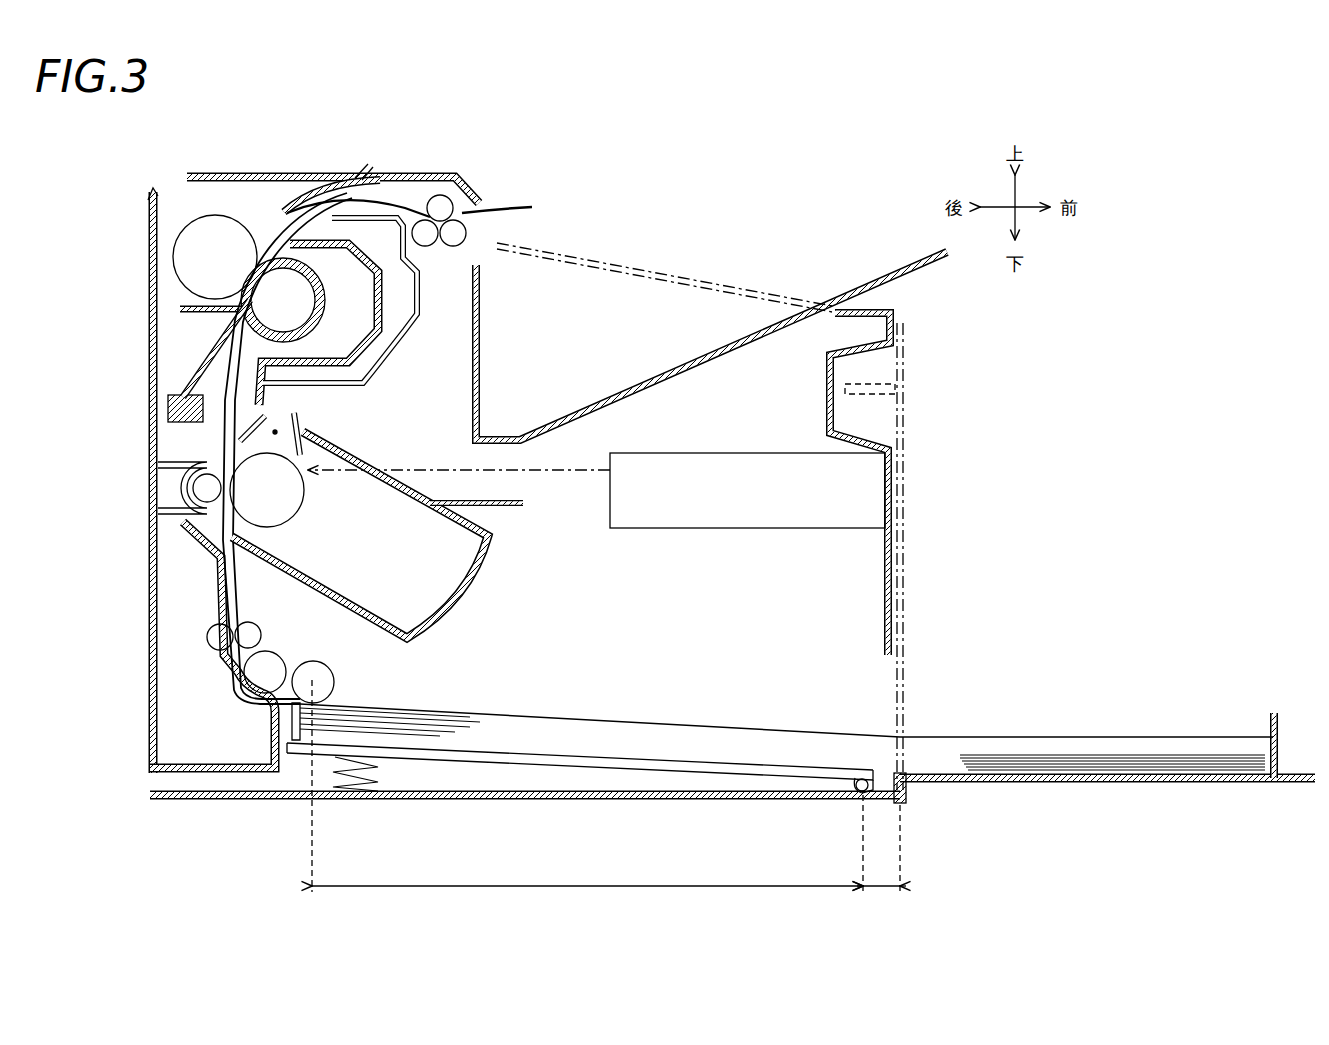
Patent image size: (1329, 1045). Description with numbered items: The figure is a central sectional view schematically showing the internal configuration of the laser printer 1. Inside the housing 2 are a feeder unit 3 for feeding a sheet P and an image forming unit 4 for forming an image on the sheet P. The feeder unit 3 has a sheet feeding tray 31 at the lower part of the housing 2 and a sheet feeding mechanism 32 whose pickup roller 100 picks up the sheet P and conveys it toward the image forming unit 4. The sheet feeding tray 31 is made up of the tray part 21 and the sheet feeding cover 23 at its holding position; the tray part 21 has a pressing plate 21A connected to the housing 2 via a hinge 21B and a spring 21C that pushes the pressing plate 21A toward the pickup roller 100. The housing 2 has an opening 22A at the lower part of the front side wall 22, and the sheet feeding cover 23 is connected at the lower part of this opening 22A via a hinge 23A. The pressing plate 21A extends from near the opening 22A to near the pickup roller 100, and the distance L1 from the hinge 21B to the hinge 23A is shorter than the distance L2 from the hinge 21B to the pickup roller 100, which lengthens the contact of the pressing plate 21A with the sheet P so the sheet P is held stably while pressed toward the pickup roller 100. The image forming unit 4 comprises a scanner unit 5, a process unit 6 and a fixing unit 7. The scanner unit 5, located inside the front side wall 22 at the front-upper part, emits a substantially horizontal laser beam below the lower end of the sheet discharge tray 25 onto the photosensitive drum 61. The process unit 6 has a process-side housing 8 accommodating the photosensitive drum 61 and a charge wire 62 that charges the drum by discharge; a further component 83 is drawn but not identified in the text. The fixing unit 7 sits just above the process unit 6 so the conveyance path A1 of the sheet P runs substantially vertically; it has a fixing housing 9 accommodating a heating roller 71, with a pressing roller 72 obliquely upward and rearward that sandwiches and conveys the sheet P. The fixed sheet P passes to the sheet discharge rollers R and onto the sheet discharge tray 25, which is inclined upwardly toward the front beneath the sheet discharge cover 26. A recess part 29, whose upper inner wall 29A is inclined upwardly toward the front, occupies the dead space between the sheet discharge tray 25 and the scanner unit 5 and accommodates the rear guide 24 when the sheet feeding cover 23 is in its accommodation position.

The laser printer 1 is at (742, 258).
The housing 2 is at (358, 174).
The feeder unit 3 is at (978, 700).
The image forming unit 4 is at (458, 426).
The scanner unit 5 is at (777, 540).
The process unit 6 is at (403, 538).
The fixing unit 7 is at (347, 409).
The process-side housing 8 is at (452, 606).
The fixing housing 9 is at (392, 322).
The tray part 21 is at (583, 773).
The pressing plate 21A is at (608, 762).
The hinge 21B is at (855, 790).
The spring 21C is at (375, 772).
The front side wall 22 is at (893, 530).
The opening 22A is at (898, 662).
The sheet feeding cover 23 is at (905, 318).
The hinge 23A is at (906, 790).
The rear guide 24 is at (872, 402).
The sheet discharge tray 25 is at (632, 382).
The sheet discharge cover 26 is at (822, 300).
The recess part 29 is at (865, 376).
The upper inner wall 29A is at (865, 348).
The sheet feeding tray 31 is at (968, 786).
The sheet feeding mechanism 32 is at (210, 662).
The photosensitive drum 61 is at (300, 505).
The charge wire 62 is at (280, 432).
The heating roller 71 is at (325, 292).
The pressing roller 72 is at (213, 216).
The supply roller 83 is at (204, 515).
The pickup roller 100 is at (320, 682).
The conveyance path A1 is at (217, 370).
The sheet P is at (512, 206).
The sheet discharge rollers R is at (448, 194).
The distance L1 is at (881, 848).
The distance L2 is at (587, 786).